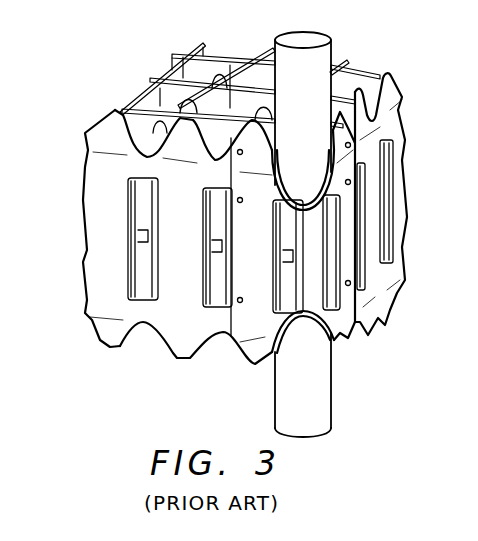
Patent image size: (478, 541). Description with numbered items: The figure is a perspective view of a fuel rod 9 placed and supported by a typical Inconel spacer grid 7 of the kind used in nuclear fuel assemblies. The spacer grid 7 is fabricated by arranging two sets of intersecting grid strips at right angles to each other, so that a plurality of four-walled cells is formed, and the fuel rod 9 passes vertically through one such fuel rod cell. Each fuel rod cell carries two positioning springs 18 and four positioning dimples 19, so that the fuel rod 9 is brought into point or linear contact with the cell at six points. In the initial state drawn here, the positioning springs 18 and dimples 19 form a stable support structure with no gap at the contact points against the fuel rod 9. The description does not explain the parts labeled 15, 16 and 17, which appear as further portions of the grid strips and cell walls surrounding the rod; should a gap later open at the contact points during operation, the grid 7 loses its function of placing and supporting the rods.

The spacer grid 7 is at (224, 222).
The fuel rod 9 is at (323, 53).
The fin plate 15 is at (177, 313).
The grid frame 16 is at (208, 65).
The fin plate edge 17 is at (247, 357).
The positioning spring 18 is at (145, 208).
The positioning dimple 19 is at (162, 127).